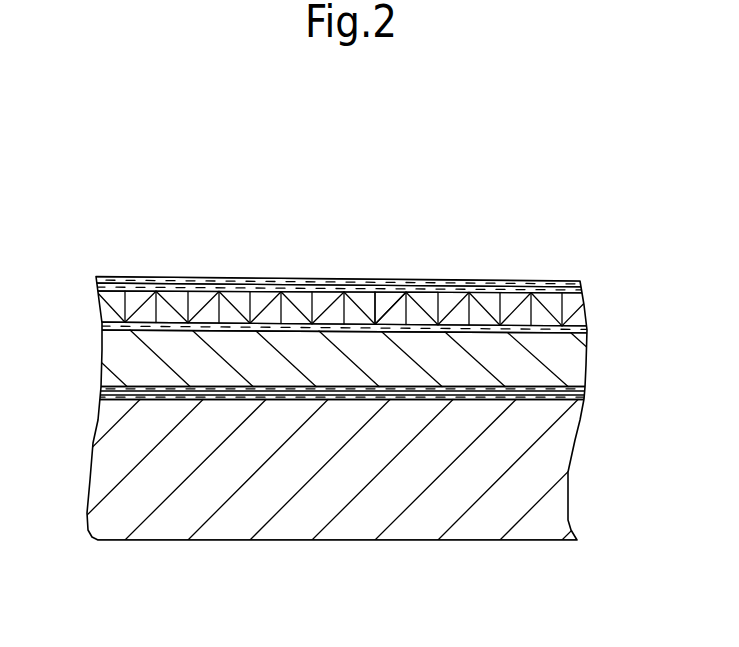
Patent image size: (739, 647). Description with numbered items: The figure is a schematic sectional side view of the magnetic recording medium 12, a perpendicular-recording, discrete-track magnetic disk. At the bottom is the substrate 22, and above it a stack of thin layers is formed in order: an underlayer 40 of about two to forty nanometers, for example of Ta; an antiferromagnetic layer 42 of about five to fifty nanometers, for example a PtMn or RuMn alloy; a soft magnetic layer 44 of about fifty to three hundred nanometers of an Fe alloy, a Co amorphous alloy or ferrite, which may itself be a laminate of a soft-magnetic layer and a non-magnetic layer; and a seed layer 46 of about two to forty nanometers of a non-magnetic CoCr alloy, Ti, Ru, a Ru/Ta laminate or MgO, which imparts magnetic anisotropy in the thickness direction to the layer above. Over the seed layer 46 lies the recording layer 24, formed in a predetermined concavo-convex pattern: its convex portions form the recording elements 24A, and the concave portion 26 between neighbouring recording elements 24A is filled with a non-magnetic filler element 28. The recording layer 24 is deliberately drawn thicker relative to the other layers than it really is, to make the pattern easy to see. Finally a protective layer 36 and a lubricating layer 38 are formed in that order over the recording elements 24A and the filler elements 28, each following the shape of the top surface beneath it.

The magnetic recording medium 12 is at (381, 177).
The substrate 22 is at (570, 488).
The recording layer 24 is at (592, 312).
The recording element 24A is at (425, 293).
The concave portion 26 is at (383, 292).
The filler element 28 is at (402, 297).
The protective layer 36 is at (582, 290).
The lubricating layer 38 is at (581, 281).
The underlayer 40 is at (582, 398).
The antiferromagnetic layer 42 is at (584, 390).
The soft magnetic layer 44 is at (586, 365).
The seed layer 46 is at (587, 331).